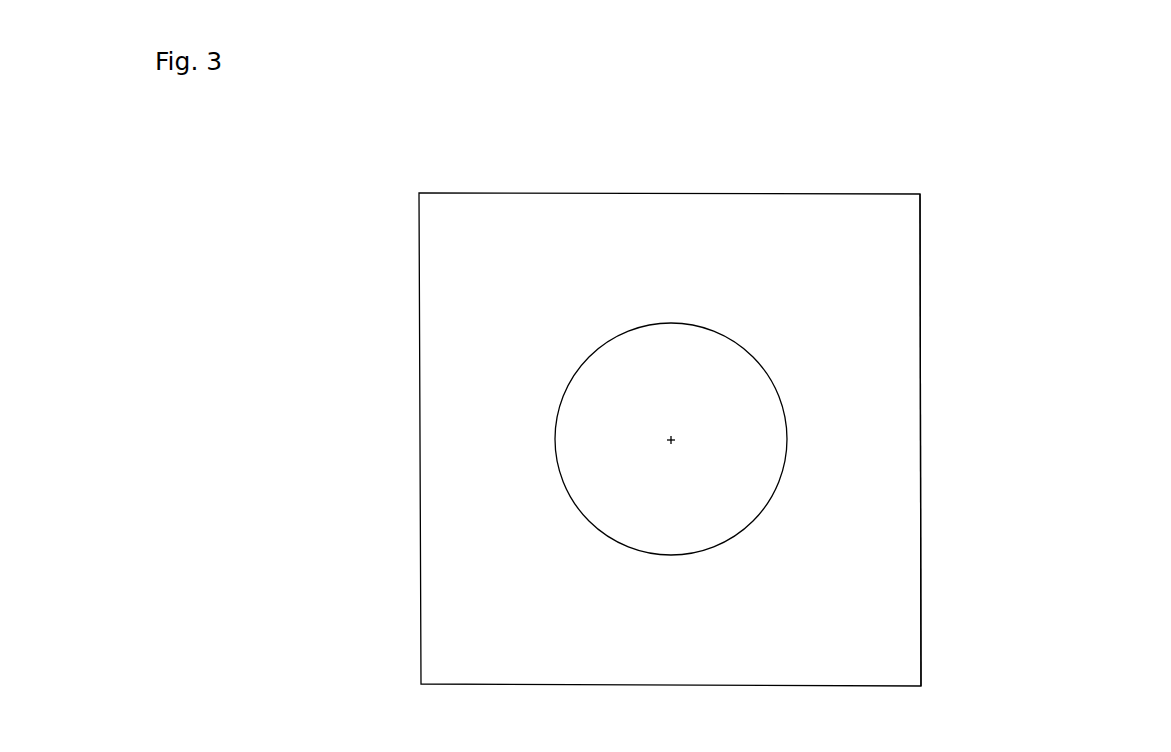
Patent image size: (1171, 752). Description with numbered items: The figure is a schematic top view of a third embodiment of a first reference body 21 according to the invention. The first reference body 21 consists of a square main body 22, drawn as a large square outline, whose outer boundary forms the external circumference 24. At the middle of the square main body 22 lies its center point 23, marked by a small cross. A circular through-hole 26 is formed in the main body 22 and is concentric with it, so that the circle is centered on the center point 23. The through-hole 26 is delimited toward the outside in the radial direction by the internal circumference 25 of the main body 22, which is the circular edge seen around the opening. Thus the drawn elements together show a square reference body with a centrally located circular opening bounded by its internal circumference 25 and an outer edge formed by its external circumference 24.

The first reference body 21 is at (858, 180).
The main body 22 is at (798, 315).
The center point 23 is at (674, 438).
The external circumference 24 is at (921, 377).
The internal circumference 25 is at (788, 440).
The through-hole 26 is at (721, 478).